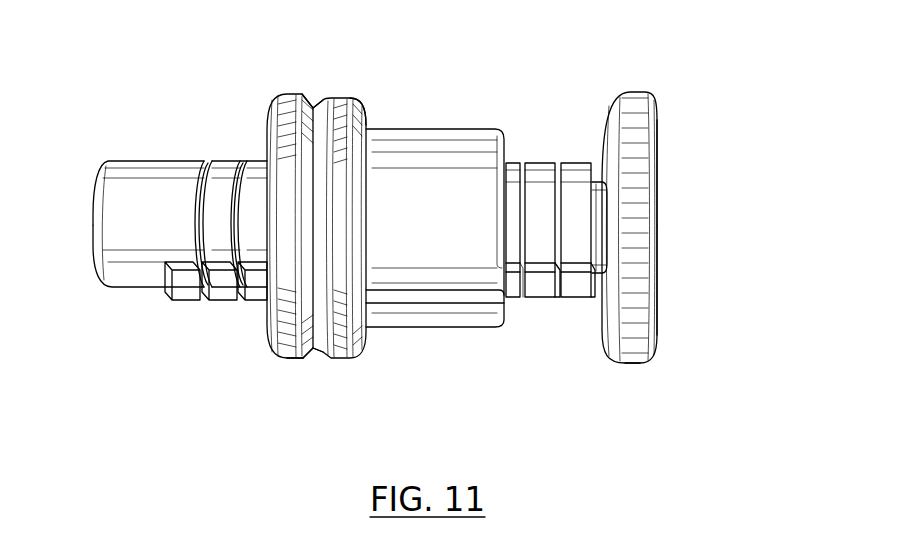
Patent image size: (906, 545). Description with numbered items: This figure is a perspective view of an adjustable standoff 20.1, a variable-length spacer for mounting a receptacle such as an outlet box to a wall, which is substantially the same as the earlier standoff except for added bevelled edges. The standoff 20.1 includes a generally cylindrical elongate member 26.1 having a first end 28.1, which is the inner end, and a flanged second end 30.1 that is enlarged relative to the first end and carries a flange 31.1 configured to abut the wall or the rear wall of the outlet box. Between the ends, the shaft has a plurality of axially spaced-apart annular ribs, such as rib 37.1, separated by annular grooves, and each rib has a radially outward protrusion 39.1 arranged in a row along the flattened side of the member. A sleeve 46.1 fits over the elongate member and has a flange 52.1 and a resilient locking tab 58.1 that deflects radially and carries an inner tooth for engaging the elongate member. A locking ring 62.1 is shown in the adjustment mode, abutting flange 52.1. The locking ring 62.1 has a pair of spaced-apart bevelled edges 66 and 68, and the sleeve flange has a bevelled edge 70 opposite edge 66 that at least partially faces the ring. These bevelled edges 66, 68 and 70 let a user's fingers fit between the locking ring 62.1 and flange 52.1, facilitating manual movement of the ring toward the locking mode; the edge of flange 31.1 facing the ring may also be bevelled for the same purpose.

The adjustable standoff 20.1 is at (665, 73).
The first end 28.1 is at (103, 183).
The sleeve 46.1 is at (290, 95).
The bevelled edge 70 is at (316, 106).
The bevelled edge 66 is at (322, 106).
The locking ring 62.1 is at (344, 97).
The bevelled edge 68 is at (360, 100).
The locking tab 58.1 is at (432, 318).
The rib 37.1 is at (538, 167).
The protrusion 39.1 is at (540, 298).
The elongate member 26.1 is at (657, 130).
The second end 30.1 is at (657, 318).
The flange 31.1 is at (630, 358).
The flange 52.1 is at (295, 353).